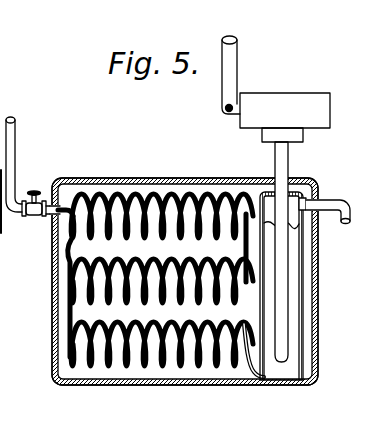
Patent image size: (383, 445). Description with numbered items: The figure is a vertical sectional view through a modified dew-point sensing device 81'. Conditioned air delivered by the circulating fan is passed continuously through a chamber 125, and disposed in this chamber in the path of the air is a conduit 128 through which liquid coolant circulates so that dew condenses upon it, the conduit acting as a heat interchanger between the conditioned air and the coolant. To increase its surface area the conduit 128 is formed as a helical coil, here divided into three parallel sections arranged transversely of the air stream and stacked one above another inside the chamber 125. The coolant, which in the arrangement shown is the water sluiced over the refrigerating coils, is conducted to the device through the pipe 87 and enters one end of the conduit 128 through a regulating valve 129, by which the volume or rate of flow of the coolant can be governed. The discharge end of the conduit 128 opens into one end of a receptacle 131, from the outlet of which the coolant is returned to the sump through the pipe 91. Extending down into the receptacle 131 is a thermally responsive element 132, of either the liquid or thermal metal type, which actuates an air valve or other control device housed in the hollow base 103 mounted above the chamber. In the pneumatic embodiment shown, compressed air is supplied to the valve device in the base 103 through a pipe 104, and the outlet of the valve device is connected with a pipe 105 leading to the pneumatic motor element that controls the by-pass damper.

The dew-point sensing device 81' is at (185, 254).
The pipe 87 is at (15, 143).
The pipe 91 is at (332, 199).
The hollow base 103 is at (262, 122).
The pipe 104 is at (226, 113).
The pipe 105 is at (233, 84).
The chamber 125 is at (55, 385).
The conduit 128 is at (73, 317).
The regulating valve 129 is at (36, 218).
The receptacle 131 is at (303, 298).
The thermally responsive element 132 is at (282, 334).